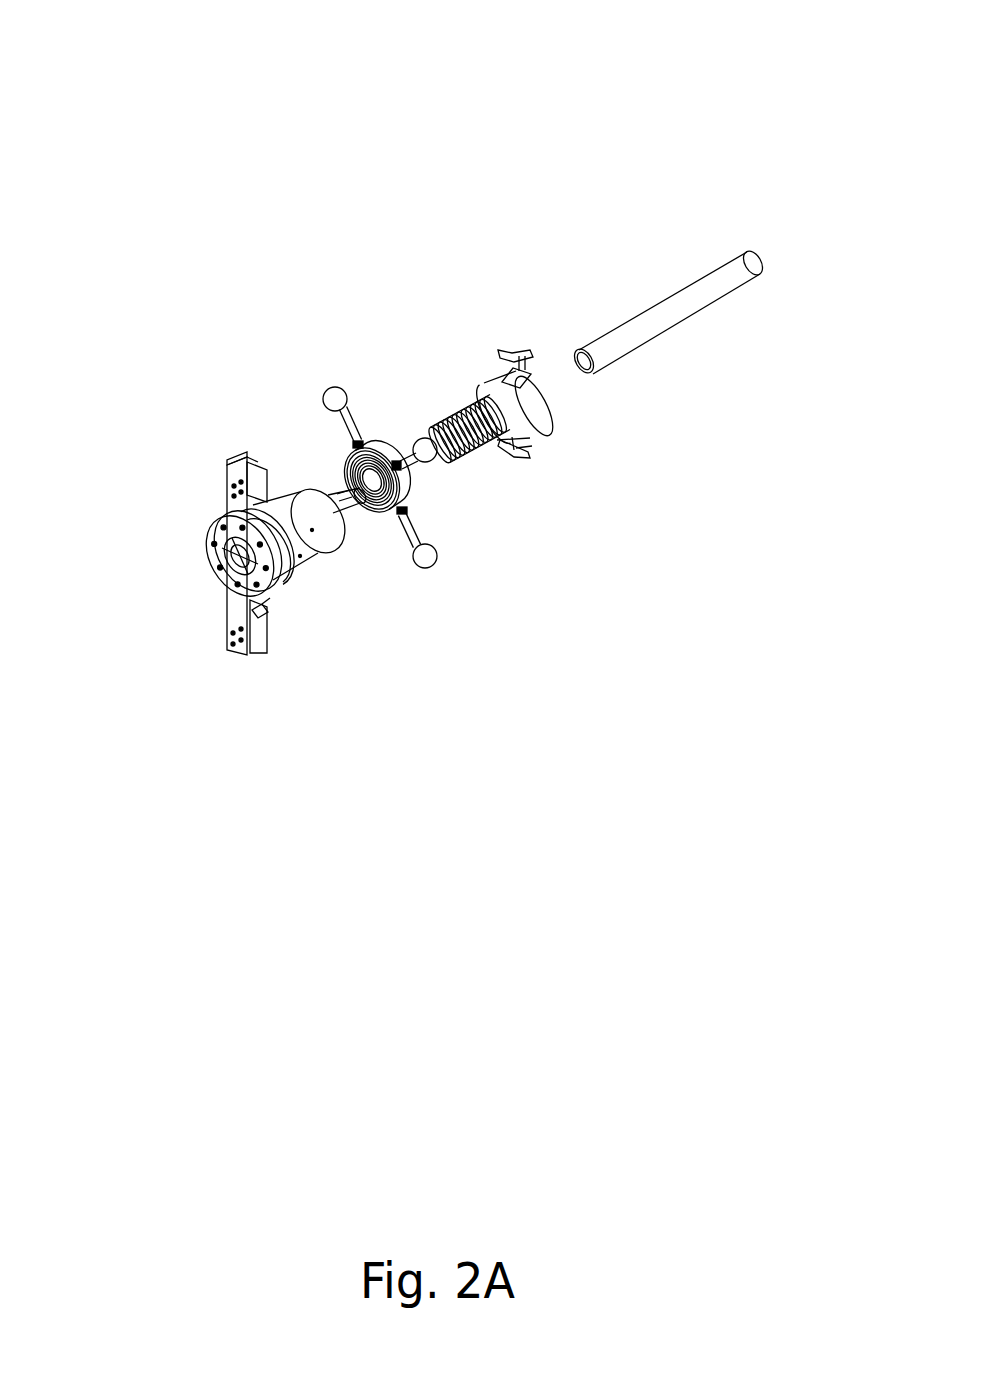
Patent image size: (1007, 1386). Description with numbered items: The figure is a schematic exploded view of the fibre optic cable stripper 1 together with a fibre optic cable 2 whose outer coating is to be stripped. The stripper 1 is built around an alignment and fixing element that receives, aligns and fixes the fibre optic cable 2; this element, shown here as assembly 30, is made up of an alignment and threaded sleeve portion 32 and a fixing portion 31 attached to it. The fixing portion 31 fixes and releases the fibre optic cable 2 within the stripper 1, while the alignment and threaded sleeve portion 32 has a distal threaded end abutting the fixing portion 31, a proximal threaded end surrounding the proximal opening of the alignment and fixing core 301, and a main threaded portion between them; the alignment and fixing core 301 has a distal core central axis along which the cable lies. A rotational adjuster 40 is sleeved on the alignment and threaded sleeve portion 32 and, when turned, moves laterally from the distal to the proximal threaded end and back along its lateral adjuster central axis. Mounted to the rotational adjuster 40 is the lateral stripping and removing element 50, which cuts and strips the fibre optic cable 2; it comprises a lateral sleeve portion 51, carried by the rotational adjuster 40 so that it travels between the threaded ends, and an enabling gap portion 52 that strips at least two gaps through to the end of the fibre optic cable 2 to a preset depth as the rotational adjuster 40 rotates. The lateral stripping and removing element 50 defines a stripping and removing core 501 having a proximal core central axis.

The fibre optic cable stripper 1 is at (388, 110).
The fibre optic cable 2 is at (662, 218).
The connecting assembly 30 is at (680, 497).
The fixing portion 31 is at (532, 403).
The alignment and threaded sleeve portion 32 is at (478, 443).
The alignment and fixing core 301 is at (443, 462).
The rotational adjuster 40 is at (392, 447).
The lateral stripping and removing element 50 is at (450, 715).
The lateral sleeve portion 51 is at (318, 527).
The enabling gap portion 52 is at (288, 565).
The stripping and removing core 501 is at (233, 560).